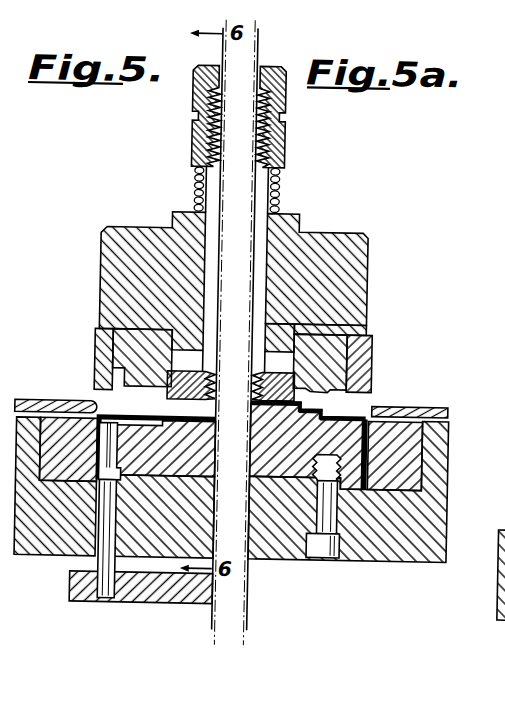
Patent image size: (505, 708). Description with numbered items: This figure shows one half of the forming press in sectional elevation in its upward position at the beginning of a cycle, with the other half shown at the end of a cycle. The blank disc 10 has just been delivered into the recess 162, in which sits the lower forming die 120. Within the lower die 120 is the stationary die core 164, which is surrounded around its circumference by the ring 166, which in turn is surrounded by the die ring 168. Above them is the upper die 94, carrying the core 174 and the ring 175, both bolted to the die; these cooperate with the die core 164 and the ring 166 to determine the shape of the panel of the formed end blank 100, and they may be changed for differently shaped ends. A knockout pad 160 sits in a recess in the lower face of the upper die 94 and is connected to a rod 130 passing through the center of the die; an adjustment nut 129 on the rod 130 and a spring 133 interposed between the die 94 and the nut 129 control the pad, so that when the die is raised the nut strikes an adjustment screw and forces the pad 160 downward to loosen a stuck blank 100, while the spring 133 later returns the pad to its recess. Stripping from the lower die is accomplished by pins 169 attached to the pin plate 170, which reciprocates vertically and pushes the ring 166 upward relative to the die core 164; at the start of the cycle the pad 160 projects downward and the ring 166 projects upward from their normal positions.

The disc 10 is at (97, 413).
The upper die 94 is at (358, 276).
The formed end blank 100 is at (357, 411).
The lower forming die 120 is at (260, 522).
The adjustment nut 129 is at (280, 97).
The rod 130 is at (256, 202).
The spring 133 is at (276, 174).
The knockout pad 160 is at (207, 383).
The recess 162 is at (100, 426).
The die core 164 is at (250, 457).
The ring 166 is at (364, 446).
The die ring 168 is at (413, 434).
The pins 169 is at (100, 565).
The pin plate 170 is at (167, 603).
The core 174 is at (336, 335).
The ring 175 is at (367, 360).